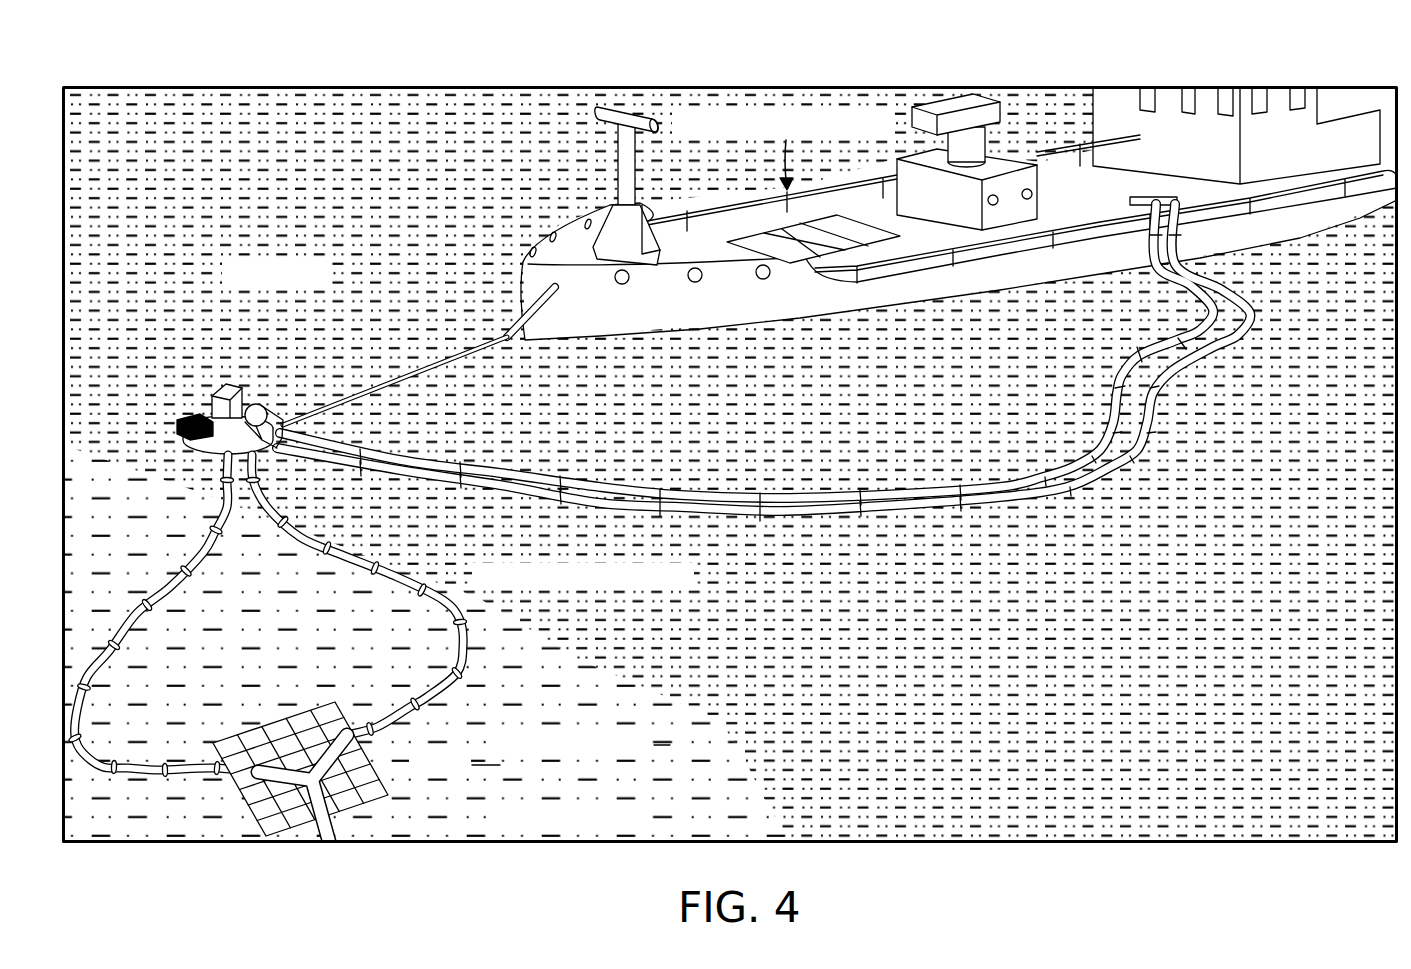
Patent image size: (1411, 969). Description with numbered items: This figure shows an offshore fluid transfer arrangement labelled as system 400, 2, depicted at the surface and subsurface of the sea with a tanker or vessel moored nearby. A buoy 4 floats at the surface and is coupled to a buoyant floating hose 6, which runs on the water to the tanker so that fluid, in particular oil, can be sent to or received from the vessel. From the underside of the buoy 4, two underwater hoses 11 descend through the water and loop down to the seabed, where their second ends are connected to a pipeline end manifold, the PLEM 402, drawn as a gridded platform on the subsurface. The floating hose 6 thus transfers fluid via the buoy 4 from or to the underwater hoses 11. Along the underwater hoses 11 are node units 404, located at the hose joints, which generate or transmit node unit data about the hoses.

The offshore fluid transfer system 400 is at (148, 70).
The system 2 is at (730, 437).
The buoy 4 is at (196, 421).
The floating hose 6 is at (749, 475).
The underwater hose 11 is at (156, 554).
The PLEM (pipeline end manifold) 402 is at (380, 766).
The node units 404 is at (470, 685).